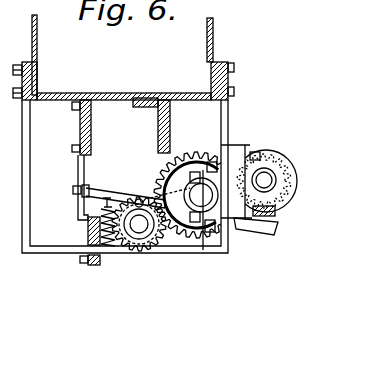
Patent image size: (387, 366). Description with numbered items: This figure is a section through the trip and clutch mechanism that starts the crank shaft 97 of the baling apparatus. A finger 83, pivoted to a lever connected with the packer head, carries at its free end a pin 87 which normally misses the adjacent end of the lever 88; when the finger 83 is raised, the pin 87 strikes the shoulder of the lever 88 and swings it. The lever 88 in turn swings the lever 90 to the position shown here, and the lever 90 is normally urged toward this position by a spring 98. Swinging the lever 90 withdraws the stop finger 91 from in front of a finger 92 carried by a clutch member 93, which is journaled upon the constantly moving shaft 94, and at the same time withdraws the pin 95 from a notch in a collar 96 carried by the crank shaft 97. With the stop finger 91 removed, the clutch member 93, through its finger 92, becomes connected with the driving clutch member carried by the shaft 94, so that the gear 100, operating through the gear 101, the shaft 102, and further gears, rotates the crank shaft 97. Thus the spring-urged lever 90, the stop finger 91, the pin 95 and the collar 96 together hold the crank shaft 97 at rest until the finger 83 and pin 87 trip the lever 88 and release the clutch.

The finger 83 is at (95, 265).
The pin 87 is at (83, 263).
The lever 88 is at (88, 185).
The lever 90 is at (102, 192).
The stop finger 91 is at (270, 231).
The finger 92 is at (278, 217).
The clutch member 93 is at (295, 182).
The shaft 94 is at (280, 175).
The pin 95 is at (139, 198).
The collar 96 is at (143, 257).
The crank shaft 97 is at (138, 233).
The spring 98 is at (115, 253).
The gear 100 is at (293, 192).
The gear 101 is at (203, 142).
The shaft 102 is at (203, 233).